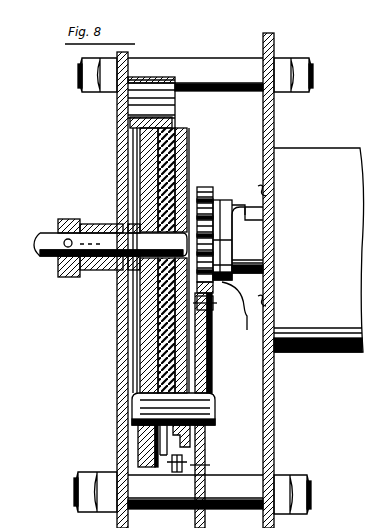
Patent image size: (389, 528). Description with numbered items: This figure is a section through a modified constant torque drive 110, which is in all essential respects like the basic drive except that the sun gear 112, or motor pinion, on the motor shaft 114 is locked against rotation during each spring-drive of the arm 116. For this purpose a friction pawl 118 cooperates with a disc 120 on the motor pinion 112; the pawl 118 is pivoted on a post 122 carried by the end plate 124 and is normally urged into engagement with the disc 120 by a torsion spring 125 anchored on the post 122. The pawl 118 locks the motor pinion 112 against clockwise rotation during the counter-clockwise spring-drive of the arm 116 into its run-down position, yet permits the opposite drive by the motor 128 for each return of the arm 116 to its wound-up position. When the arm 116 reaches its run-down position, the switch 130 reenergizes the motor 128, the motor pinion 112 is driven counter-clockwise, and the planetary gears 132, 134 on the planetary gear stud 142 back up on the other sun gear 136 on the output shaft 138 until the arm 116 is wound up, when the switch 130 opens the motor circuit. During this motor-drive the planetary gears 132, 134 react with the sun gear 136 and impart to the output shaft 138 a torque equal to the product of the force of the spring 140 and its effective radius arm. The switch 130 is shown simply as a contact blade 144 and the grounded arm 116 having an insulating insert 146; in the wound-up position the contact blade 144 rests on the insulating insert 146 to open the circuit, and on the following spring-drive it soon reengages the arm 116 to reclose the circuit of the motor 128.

The constant torque drive 110 is at (240, 41).
The sun gear 112 is at (204, 187).
The motor shaft 114 is at (219, 296).
The arm 116 is at (143, 358).
The friction pawl 118 is at (222, 204).
The disc 120 is at (246, 312).
The post 122 is at (260, 208).
The end plate 124 is at (275, 398).
The torsion spring 125 is at (240, 205).
The motor 128 is at (329, 146).
The switch 130 is at (190, 109).
The planetary gear 132 is at (207, 453).
The planetary gear 134 is at (176, 472).
The sun gear 136 is at (184, 166).
The output shaft 138 is at (47, 231).
The spring 140 is at (156, 332).
The planetary gear stud 142 is at (205, 407).
The contact blade 144 is at (168, 78).
The insulating insert 146 is at (173, 122).